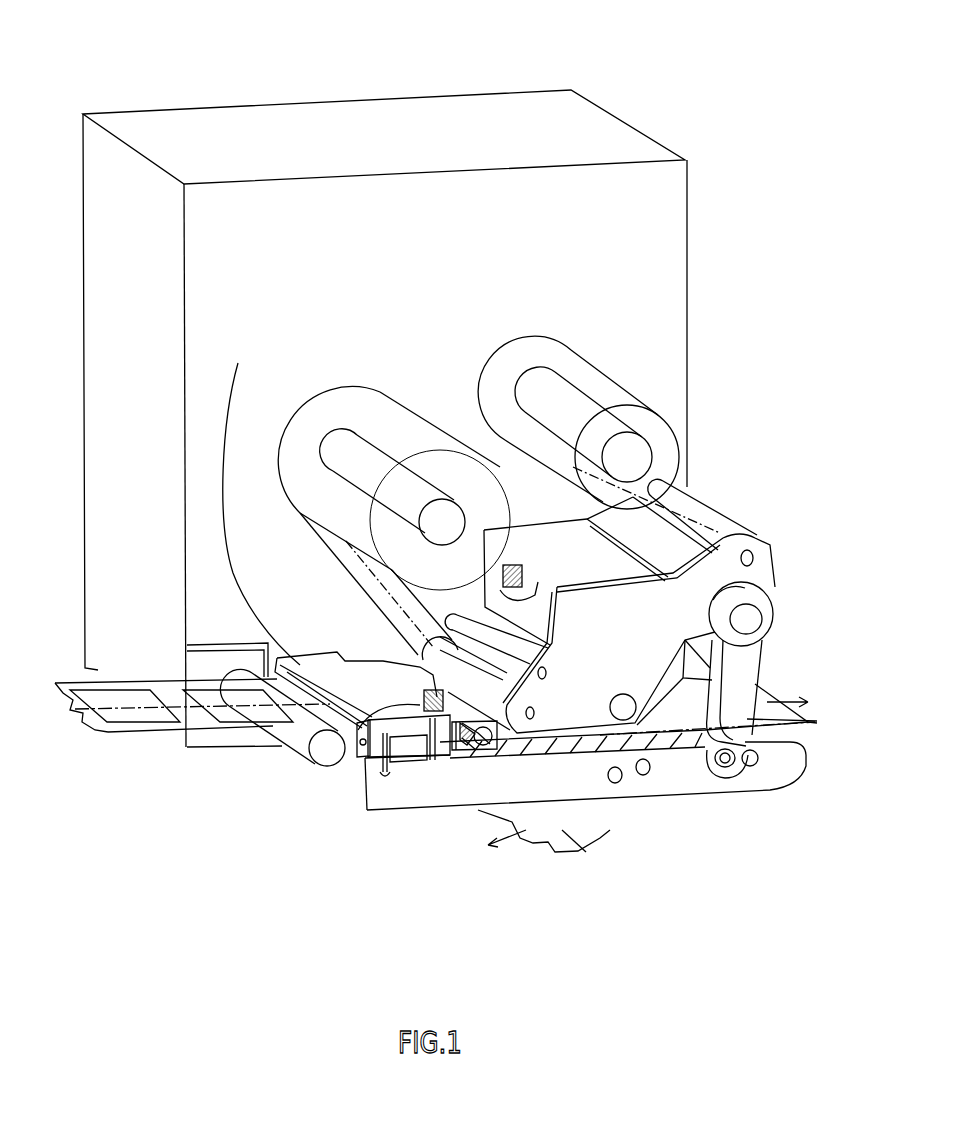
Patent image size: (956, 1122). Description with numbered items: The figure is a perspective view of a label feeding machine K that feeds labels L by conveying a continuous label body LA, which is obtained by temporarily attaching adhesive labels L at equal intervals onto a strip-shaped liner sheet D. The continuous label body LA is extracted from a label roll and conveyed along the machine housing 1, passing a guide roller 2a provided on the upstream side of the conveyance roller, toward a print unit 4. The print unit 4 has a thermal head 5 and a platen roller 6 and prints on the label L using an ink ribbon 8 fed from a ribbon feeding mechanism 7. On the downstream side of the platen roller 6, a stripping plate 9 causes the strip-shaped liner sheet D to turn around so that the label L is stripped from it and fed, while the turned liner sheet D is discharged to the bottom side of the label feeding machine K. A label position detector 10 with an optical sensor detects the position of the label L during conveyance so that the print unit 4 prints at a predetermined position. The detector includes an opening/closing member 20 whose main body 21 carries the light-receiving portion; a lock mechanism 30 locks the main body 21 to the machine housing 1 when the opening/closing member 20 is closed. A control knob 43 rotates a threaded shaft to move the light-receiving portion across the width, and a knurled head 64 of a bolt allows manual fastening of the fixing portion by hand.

The label feeding machine K is at (638, 110).
The machine housing 1 is at (667, 377).
The ribbon feeding mechanism 7 is at (615, 353).
The ink ribbon 8 is at (330, 545).
The opening/closing member 20 is at (261, 503).
The main body 21 is at (355, 655).
The guide roller 2a is at (301, 741).
The print unit 4 is at (727, 497).
The platen roller 6 is at (695, 748).
The thermal head 5 is at (760, 793).
The stripping plate 9 is at (785, 735).
The label position detector 10 is at (357, 786).
The lock mechanism 30 is at (405, 772).
The head 64 is at (350, 785).
The control knob 43 is at (483, 768).
The continuous label body LA is at (205, 737).
The label L is at (118, 730).
The strip-shaped liner sheet D is at (77, 783).